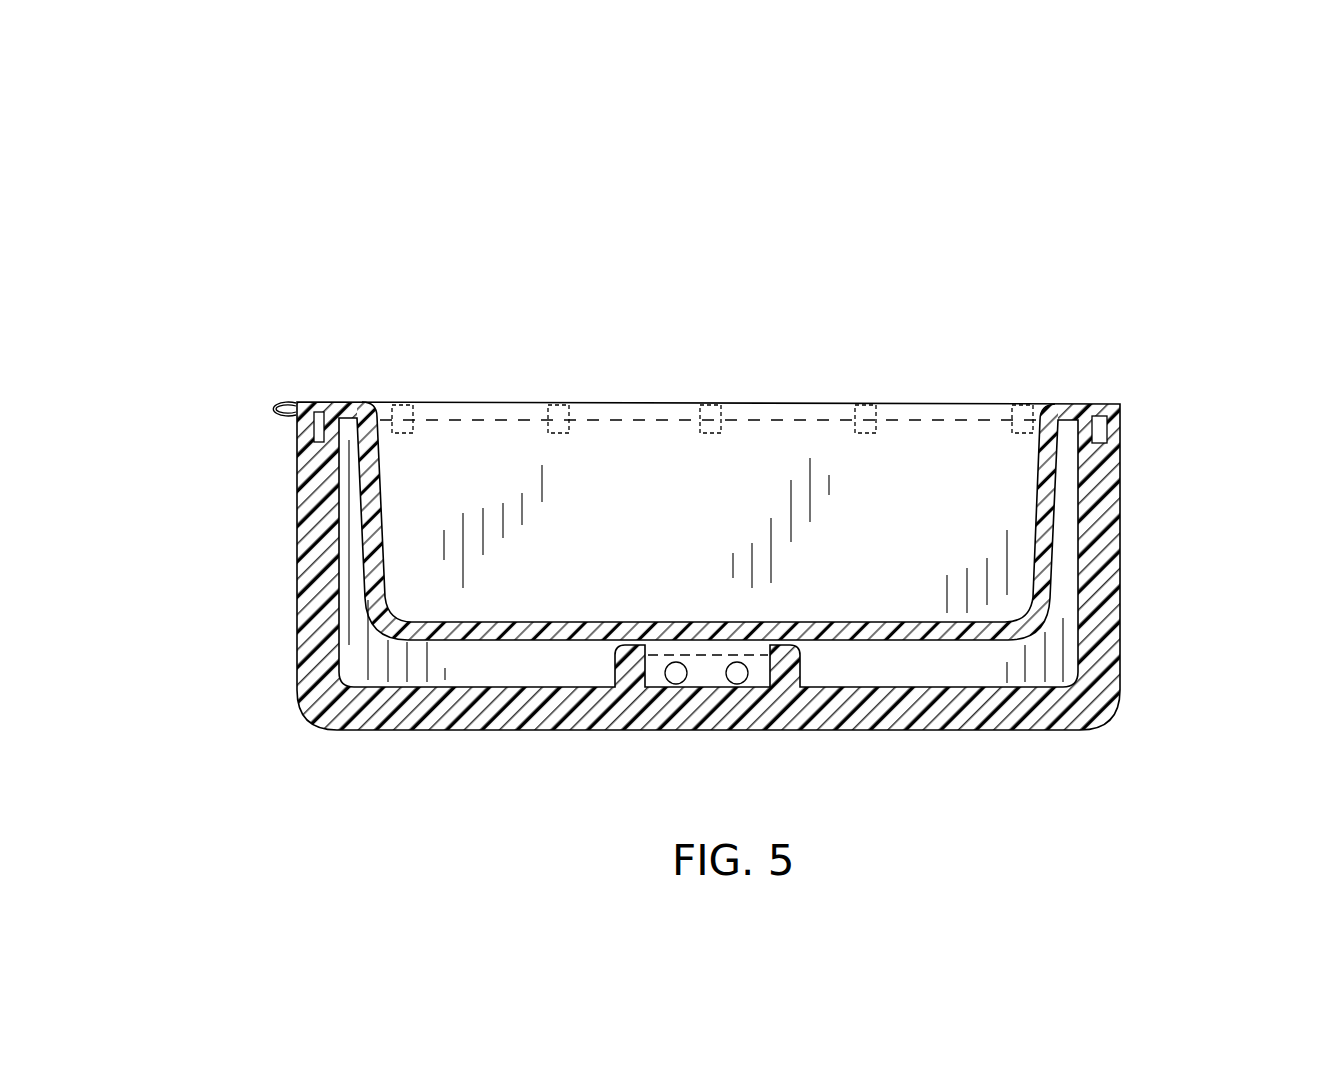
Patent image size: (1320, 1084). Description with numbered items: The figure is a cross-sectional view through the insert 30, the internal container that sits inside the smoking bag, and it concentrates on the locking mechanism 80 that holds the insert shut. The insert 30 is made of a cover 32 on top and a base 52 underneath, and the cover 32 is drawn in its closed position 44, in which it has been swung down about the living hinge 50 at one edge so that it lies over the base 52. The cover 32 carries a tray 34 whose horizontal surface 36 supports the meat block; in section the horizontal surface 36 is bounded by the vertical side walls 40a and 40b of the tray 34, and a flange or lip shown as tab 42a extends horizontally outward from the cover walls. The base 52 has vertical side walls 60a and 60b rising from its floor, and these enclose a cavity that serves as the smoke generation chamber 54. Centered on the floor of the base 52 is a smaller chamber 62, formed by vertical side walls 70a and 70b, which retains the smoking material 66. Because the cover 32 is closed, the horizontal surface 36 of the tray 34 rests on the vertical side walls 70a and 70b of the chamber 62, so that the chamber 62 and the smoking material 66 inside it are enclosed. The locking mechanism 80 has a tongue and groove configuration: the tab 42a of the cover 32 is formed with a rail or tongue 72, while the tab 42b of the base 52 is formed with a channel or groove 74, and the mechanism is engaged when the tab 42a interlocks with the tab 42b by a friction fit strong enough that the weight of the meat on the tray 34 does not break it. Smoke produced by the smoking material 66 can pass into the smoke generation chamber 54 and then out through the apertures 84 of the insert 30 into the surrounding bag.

The insert 30 is at (218, 210).
The cover 32 is at (522, 380).
The tray 34 is at (768, 380).
The horizontal surface 36 is at (600, 628).
The vertical side wall 40a is at (1035, 522).
The vertical side wall 40b is at (378, 522).
The tab 42a is at (300, 401).
The tab 42b is at (1112, 426).
The closed position 44 is at (1168, 262).
The living hinge 50 is at (272, 412).
The base 52 is at (1115, 745).
The smoke generation chamber 54 is at (1017, 657).
The vertical side wall 60a is at (299, 588).
The vertical side wall 60b is at (1118, 594).
The chamber 62 is at (708, 662).
The smoking material 66 is at (735, 680).
The vertical side wall 70a is at (620, 662).
The vertical side wall 70b is at (798, 665).
The tongue 72 is at (316, 412).
The groove 74 is at (318, 446).
The locking mechanism 80 is at (306, 325).
The apertures 84 is at (562, 397).